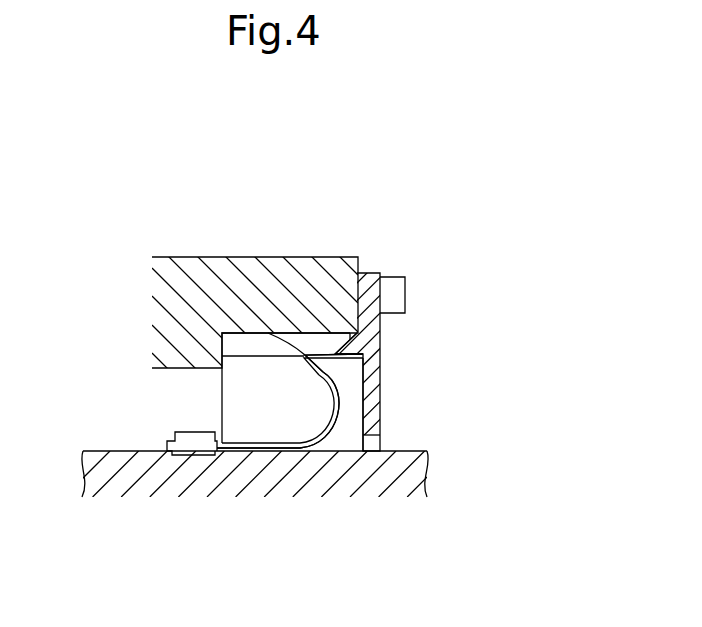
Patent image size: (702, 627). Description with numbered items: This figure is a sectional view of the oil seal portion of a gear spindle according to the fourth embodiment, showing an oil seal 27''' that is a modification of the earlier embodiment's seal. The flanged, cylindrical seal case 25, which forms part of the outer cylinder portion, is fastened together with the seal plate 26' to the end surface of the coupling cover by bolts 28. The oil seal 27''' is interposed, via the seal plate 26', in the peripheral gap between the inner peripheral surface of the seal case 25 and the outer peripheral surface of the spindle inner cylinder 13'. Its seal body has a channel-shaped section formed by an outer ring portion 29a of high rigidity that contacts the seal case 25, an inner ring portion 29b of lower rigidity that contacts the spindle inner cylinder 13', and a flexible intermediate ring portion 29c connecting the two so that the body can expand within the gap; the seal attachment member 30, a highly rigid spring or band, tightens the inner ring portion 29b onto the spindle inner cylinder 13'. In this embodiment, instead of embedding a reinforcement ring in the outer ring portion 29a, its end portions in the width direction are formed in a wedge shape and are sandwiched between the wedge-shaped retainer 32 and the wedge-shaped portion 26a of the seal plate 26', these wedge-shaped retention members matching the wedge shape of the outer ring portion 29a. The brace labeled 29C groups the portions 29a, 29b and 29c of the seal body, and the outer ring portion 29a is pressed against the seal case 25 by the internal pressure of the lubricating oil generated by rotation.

The spindle inner cylinder 13' is at (244, 509).
The seal case 25 is at (185, 283).
The seal plate 26' is at (400, 380).
The wedge-shaped portion 26a is at (327, 350).
The oil seal 27''' is at (293, 252).
The bolt 28 is at (390, 283).
The outer ring portion 29a is at (318, 337).
The inner ring portion 29b is at (213, 430).
The intermediate ring portion 29c is at (340, 398).
The plate spring 29C is at (487, 352).
The seal attachment member 30 is at (203, 447).
The wedge-shaped retainer 32 is at (240, 347).